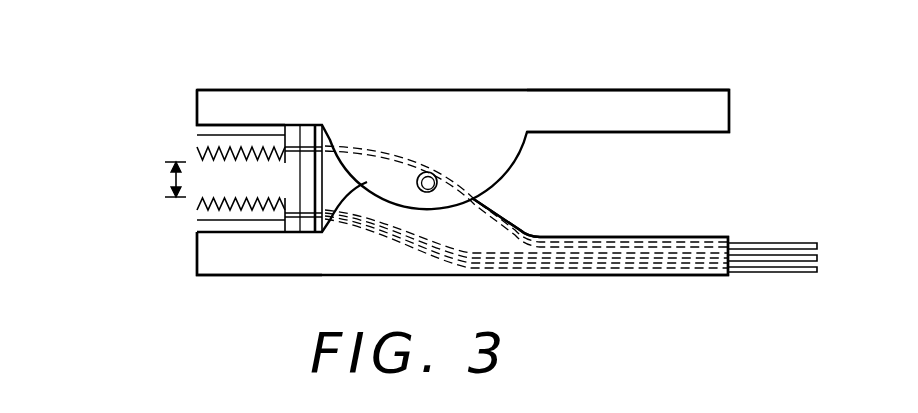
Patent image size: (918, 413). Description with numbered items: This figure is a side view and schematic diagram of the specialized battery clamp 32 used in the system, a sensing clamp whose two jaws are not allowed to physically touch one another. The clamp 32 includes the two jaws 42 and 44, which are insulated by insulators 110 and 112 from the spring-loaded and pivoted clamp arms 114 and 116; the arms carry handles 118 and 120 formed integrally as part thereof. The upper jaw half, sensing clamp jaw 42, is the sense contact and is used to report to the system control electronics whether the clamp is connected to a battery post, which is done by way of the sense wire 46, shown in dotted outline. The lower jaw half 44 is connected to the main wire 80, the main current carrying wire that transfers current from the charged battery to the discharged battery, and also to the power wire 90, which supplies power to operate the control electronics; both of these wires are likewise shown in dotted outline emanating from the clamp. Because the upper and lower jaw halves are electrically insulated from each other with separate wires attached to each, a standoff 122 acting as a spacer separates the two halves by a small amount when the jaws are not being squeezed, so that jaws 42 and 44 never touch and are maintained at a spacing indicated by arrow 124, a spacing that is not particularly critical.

The specialized battery clamp 32 is at (437, 91).
The sensing clamp jaw 42 is at (198, 142).
The jaw 44 is at (197, 211).
The sense wire 46 is at (491, 210).
The main wire 80 is at (426, 258).
The power wire 90 is at (427, 243).
The insulator 110 is at (243, 130).
The insulator 112 is at (207, 231).
The clamp arm 114 is at (257, 262).
The clamp arm 116 is at (328, 107).
The handle 118 is at (620, 92).
The handle 120 is at (597, 277).
The standoff 122 is at (318, 186).
The arrow 124 is at (166, 180).